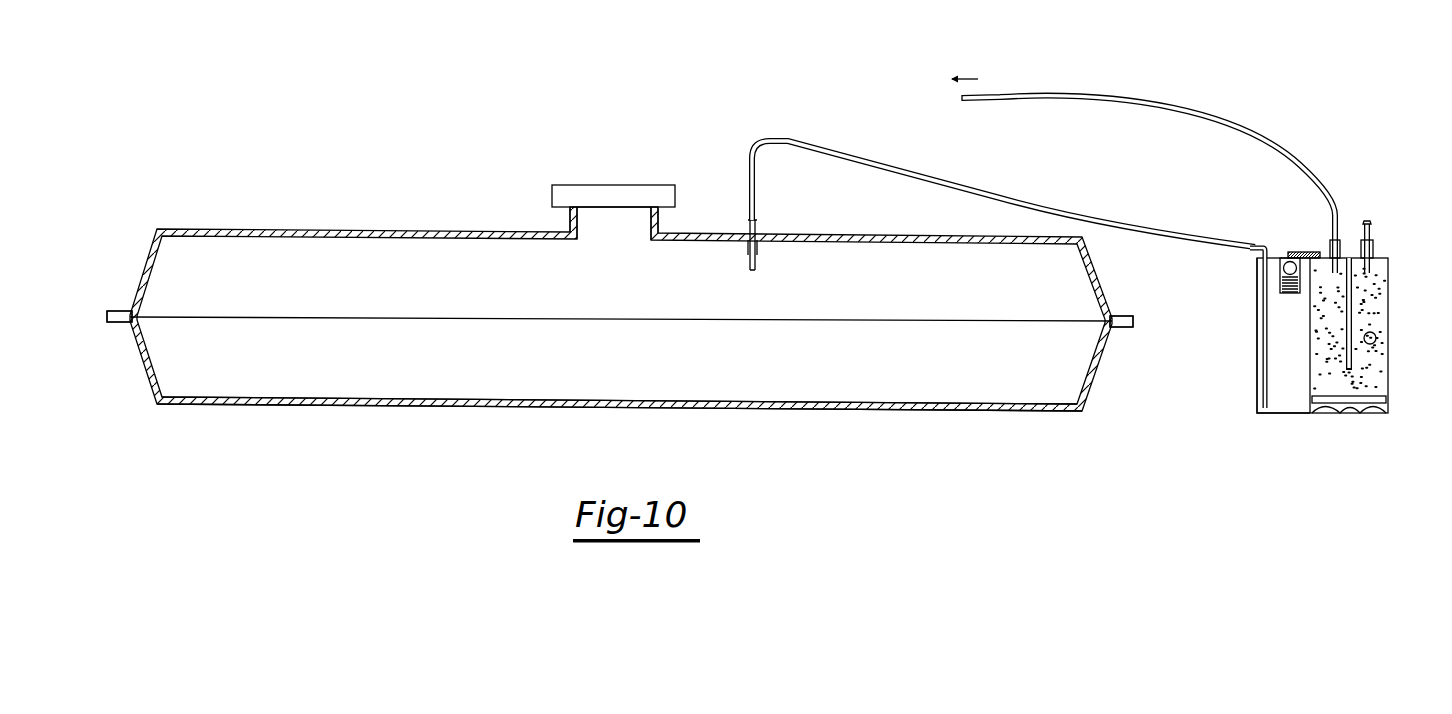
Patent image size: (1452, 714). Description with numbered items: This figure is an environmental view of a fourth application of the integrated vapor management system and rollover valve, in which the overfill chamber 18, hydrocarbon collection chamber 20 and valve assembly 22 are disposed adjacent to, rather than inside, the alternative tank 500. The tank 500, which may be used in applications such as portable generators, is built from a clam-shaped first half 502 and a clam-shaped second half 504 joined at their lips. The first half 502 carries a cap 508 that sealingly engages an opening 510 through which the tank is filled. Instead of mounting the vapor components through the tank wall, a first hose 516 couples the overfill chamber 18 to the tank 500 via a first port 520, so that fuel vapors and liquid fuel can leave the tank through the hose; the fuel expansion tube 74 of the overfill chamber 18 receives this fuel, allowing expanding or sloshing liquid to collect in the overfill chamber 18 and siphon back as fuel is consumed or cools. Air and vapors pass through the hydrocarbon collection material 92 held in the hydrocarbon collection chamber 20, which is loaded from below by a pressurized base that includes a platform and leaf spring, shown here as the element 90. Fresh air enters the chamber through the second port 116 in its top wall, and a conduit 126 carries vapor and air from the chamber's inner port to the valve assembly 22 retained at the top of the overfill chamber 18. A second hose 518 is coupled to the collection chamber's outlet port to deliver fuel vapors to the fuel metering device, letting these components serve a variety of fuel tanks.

The alternative tank 500 is at (630, 290).
The first half 502 is at (180, 226).
The second half 504 is at (244, 408).
The cap 508 is at (603, 185).
The opening 510 is at (590, 218).
The first hose 516 is at (1015, 197).
The second hose 518 is at (1135, 96).
The first port 520 is at (748, 223).
The fuel expansion tube 74 is at (1258, 245).
The valve assembly 22 is at (1283, 253).
The conduit 126 is at (1302, 251).
The second port 116 is at (1372, 230).
The hydrocarbon collection chamber 20 is at (1348, 318).
The hydrocarbon collection material 92 is at (1378, 338).
The filter plate 90 is at (1392, 400).
The overfill chamber 18 is at (1272, 418).